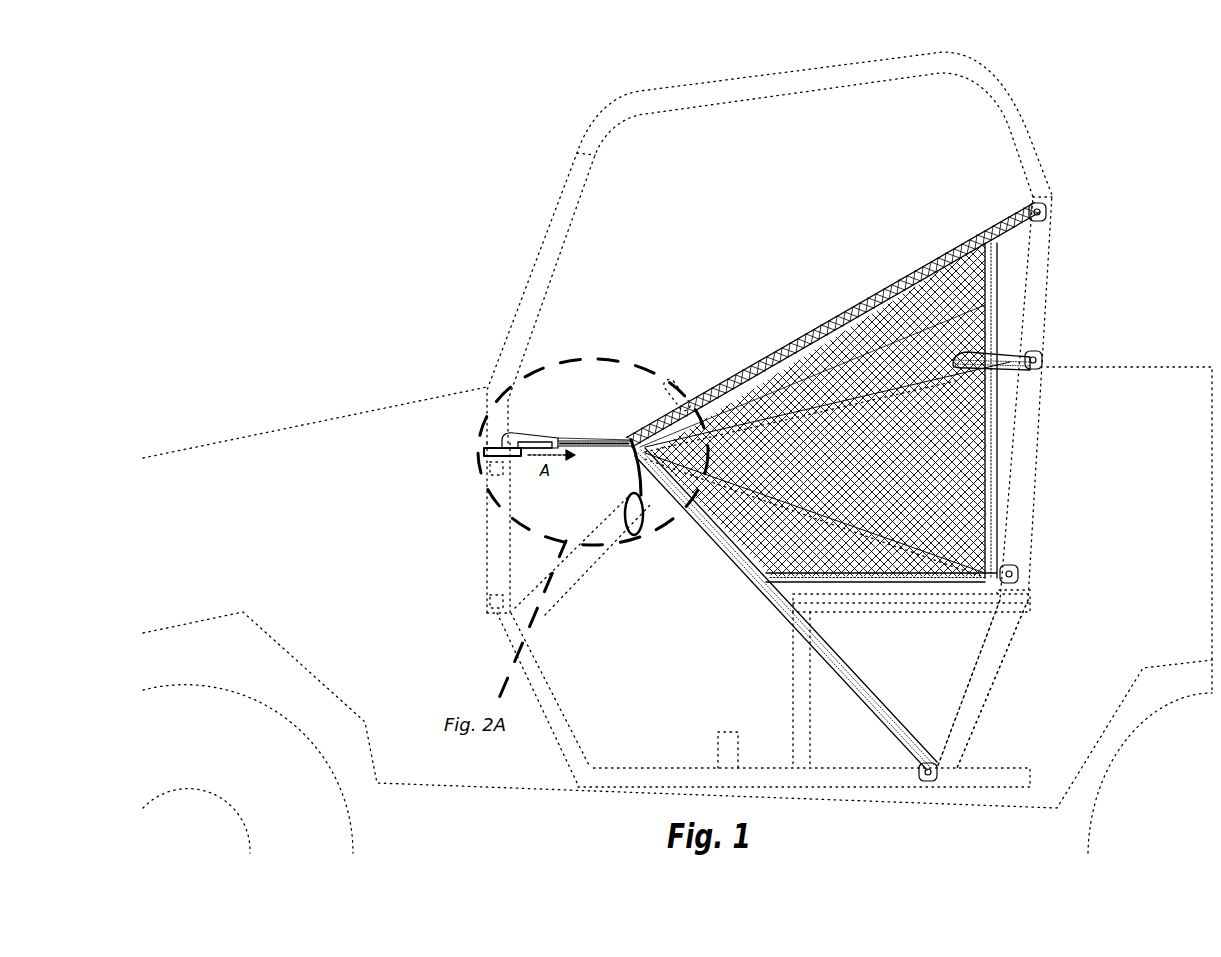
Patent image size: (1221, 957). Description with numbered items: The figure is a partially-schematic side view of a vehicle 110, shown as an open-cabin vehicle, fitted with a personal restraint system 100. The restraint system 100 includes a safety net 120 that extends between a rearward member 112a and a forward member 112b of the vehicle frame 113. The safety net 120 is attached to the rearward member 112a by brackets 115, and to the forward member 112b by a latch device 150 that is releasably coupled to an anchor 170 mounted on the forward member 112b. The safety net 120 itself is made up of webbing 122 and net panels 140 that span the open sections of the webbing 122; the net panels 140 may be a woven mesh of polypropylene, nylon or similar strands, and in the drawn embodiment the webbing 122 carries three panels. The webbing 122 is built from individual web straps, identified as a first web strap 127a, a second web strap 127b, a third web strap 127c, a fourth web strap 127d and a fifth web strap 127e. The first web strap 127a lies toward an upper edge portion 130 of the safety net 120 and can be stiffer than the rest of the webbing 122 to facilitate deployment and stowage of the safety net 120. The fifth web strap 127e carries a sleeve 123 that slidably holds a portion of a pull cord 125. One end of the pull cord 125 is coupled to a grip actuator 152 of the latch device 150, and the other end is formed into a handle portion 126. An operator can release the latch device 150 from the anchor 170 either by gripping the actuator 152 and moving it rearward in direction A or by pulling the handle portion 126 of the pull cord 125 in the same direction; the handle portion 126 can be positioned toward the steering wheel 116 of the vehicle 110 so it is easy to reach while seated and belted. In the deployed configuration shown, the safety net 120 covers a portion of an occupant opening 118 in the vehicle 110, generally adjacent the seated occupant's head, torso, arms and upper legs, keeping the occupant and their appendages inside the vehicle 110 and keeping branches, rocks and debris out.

The personal restraint system 100 is at (573, 330).
The vehicle 110 is at (338, 418).
The rearward member 112a is at (1023, 530).
The forward member 112b is at (493, 510).
The vehicle frame 113 is at (493, 523).
The brackets 115 is at (1048, 212).
The steering wheel 116 is at (668, 378).
The occupant opening 118 is at (672, 180).
The safety net 120 is at (773, 488).
The webbing 122 is at (990, 420).
The sleeve 123 is at (630, 440).
The pull cord 125 is at (628, 480).
The handle portion 126 is at (630, 525).
The first web strap 127a is at (788, 385).
The second web strap 127b is at (1000, 342).
The third web strap 127c is at (713, 480).
The fourth web strap 127d is at (733, 550).
The fifth web strap 127e is at (573, 440).
The upper edge portion 130 is at (822, 330).
The net panels 140 is at (922, 317).
The latch device 150 is at (508, 428).
The grip actuator 152 is at (533, 440).
The anchor 170 is at (486, 440).